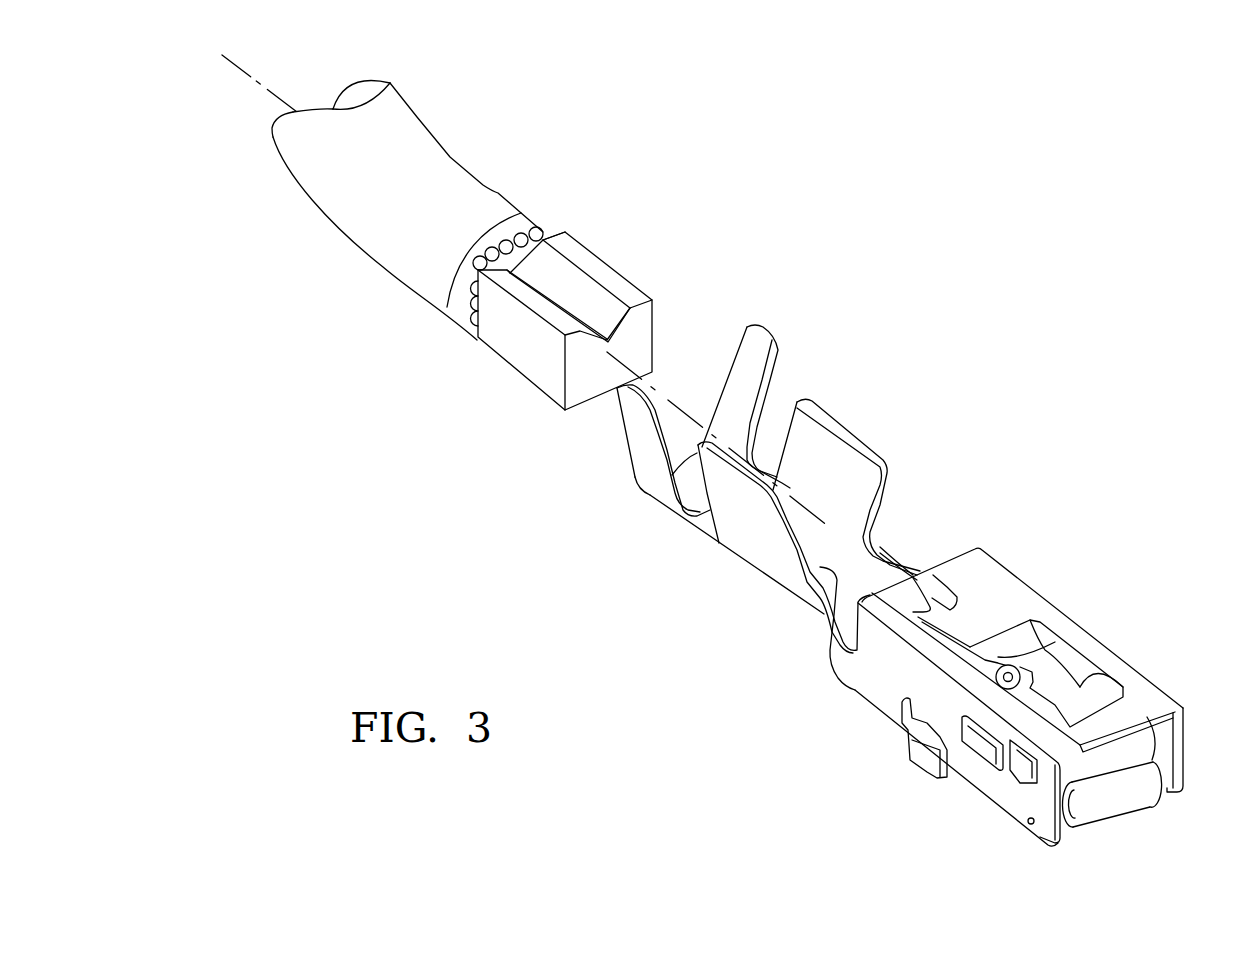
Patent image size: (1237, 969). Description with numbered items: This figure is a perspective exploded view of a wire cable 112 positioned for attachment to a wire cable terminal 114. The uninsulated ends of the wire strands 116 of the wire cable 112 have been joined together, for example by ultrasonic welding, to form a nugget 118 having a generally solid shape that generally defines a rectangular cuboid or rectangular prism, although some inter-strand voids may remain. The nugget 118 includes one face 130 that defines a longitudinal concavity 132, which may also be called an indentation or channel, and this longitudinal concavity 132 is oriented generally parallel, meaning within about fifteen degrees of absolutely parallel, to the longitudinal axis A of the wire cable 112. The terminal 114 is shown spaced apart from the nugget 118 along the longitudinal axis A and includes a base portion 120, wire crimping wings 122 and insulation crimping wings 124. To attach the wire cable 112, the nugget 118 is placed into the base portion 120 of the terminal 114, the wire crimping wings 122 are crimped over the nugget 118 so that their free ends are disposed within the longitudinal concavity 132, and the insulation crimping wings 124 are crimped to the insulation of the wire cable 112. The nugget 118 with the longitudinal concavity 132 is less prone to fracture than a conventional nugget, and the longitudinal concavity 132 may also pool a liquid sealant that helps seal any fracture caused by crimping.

The longitudinal axis A is at (237, 69).
The wire cable 112 is at (495, 131).
The wire cable terminal 114 is at (1087, 602).
The wire strands 116 is at (528, 238).
The nugget 118 is at (589, 318).
The base portion 120 is at (824, 614).
The wire crimping wings 122 is at (742, 518).
The insulation crimping wings 124 is at (633, 425).
The face 130 is at (583, 260).
The longitudinal concavity 132 is at (603, 310).